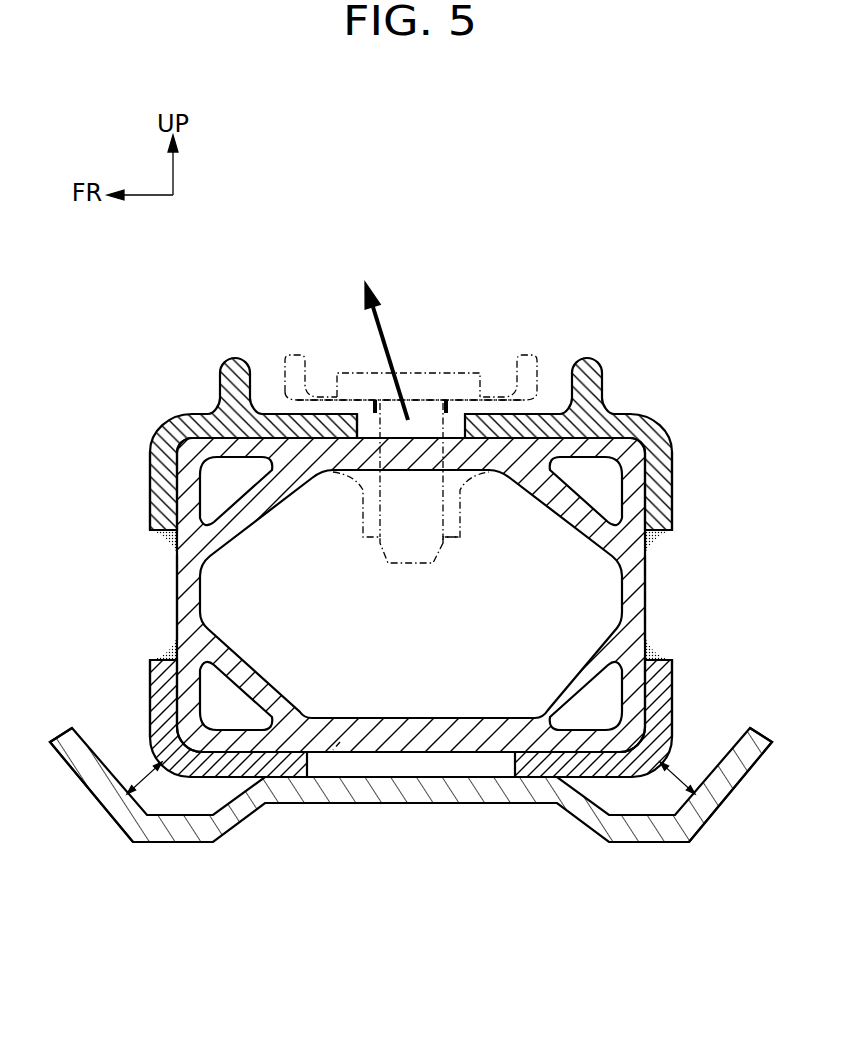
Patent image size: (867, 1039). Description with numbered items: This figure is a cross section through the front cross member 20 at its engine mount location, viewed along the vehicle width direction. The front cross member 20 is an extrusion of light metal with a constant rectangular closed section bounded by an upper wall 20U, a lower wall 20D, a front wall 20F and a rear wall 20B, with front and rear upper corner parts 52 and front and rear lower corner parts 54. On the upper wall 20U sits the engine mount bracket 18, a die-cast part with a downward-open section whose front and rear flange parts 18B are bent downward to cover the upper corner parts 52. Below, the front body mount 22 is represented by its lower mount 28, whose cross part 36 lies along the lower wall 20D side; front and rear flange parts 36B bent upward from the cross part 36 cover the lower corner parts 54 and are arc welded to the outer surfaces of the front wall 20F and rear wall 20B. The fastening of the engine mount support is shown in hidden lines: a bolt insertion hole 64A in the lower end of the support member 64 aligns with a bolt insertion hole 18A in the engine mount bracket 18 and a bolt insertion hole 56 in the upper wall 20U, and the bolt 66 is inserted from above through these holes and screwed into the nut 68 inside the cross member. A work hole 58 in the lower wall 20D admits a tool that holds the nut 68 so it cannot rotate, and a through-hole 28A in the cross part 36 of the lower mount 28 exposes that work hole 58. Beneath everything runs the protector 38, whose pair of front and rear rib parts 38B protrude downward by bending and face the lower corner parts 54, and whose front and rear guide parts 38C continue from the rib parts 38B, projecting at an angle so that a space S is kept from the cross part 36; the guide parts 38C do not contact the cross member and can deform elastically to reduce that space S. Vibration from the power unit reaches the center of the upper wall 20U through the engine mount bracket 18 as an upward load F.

The engine mount bracket 18 is at (187, 408).
The bolt insertion hole 18A is at (370, 405).
The front and rear flange parts 18B is at (147, 477).
The front cross member 20 is at (620, 440).
The upper wall 20U is at (480, 466).
The lower wall 20D is at (503, 717).
The front wall 20F is at (177, 590).
The rear wall 20B is at (645, 598).
The front body mount 22 is at (410, 735).
The lower mount 28 is at (297, 760).
The through-hole 28A is at (507, 778).
The cross part 36 is at (557, 740).
The front and rear flange parts 36B is at (150, 680).
The protector 38 is at (363, 817).
The rib parts 38B is at (163, 845).
The guide parts 38C is at (50, 747).
The front and rear upper corner parts 52 is at (162, 436).
The front and rear lower corner parts 54 is at (150, 710).
The bolt insertion hole 56 is at (393, 475).
The work hole 58 is at (338, 742).
The support member 64 is at (527, 354).
The bolt insertion hole 64A is at (447, 410).
The bolt 66 is at (423, 373).
The nut 68 is at (453, 540).
The load F is at (388, 343).
The space S is at (132, 783).